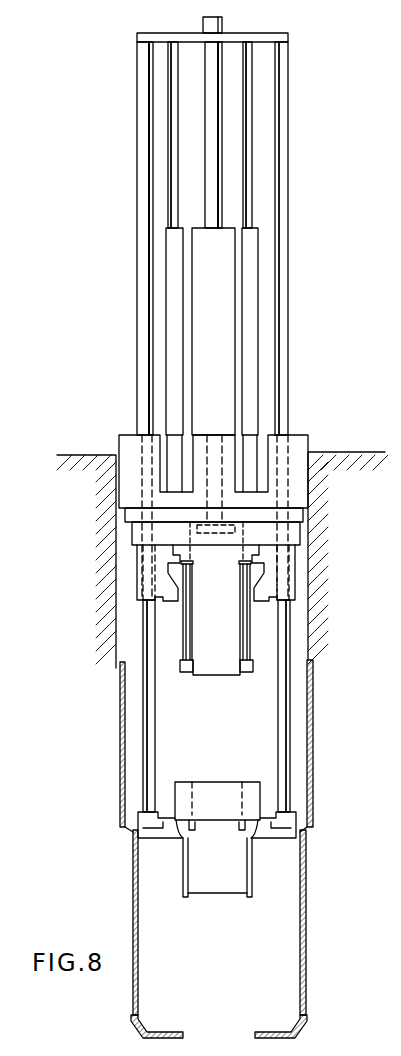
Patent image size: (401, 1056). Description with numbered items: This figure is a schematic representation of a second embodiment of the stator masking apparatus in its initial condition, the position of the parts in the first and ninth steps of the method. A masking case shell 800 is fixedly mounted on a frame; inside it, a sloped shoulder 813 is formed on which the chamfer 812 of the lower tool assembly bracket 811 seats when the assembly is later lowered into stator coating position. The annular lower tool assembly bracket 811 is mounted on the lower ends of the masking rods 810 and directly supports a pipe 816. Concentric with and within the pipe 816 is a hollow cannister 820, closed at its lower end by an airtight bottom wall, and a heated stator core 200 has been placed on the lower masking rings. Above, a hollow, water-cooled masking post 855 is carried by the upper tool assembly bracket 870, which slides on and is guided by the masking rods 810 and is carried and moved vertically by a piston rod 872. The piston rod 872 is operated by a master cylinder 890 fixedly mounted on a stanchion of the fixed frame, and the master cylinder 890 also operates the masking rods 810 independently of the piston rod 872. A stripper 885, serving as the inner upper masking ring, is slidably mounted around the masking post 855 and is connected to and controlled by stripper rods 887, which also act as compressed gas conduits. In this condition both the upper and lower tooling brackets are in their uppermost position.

The masking rods 810 is at (140, 286).
The piston rod 872 is at (215, 333).
The master cylinder 890 is at (298, 433).
The upper tool assembly bracket 870 is at (222, 573).
The stripper rods 887 is at (185, 638).
The stripper 885 is at (190, 673).
The masking post 855 is at (221, 668).
The container 200 is at (228, 808).
The lower tool assembly bracket 811 is at (140, 832).
The chamfer 812 is at (300, 831).
The masking case shell 800 is at (308, 885).
The pipe 816 is at (253, 868).
The cannister 820 is at (206, 885).
The sloped shoulder 813 is at (147, 1032).